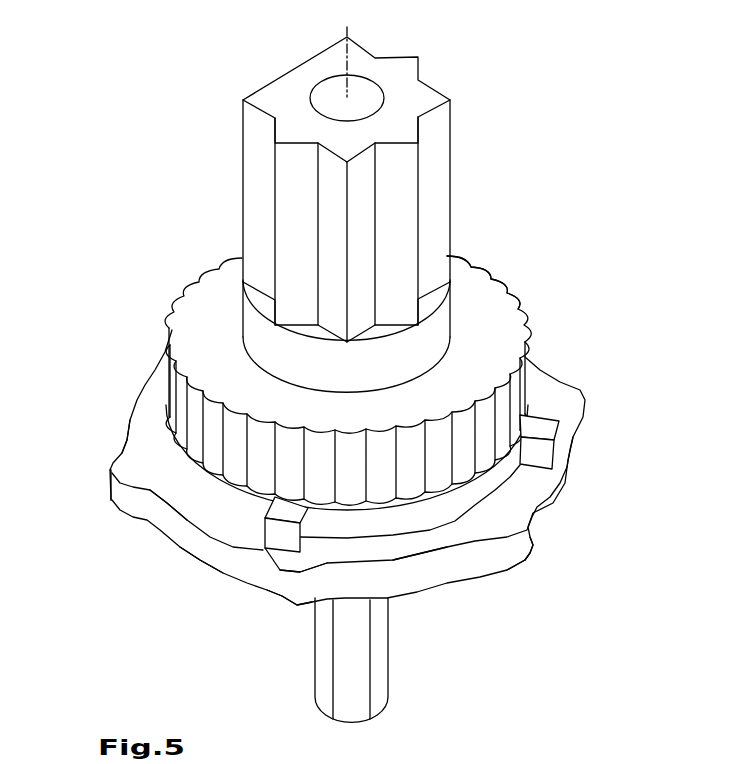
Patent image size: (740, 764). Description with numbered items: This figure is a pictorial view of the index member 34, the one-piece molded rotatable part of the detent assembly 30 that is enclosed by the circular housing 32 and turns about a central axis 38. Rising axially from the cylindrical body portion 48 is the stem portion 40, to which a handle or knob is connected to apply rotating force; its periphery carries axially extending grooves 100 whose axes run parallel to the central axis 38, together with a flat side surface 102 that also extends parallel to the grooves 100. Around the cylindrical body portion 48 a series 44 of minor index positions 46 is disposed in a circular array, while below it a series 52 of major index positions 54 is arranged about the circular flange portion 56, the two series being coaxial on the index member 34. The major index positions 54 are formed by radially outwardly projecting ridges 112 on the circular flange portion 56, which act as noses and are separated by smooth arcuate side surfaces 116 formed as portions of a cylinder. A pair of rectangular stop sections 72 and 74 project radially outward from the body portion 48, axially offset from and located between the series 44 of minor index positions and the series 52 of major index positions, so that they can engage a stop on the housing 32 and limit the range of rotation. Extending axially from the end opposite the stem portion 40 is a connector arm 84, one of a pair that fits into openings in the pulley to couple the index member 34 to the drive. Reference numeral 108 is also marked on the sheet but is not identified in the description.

The detent assembly 30 is at (614, 749).
The circular housing 32 is at (704, 752).
The index member 34 is at (528, 201).
The central axis 38 is at (358, 48).
The stem portion 40 is at (369, 173).
The series of minor index positions 44 is at (368, 375).
The minor index positions 46 is at (200, 412).
The cylindrical body portion 48 is at (519, 299).
The series of major index positions 52 is at (552, 507).
The major index positions 54 is at (114, 498).
The circular flange portion 56 is at (182, 560).
The rectangular stop section 72 is at (278, 540).
The rectangular stop section 74 is at (557, 447).
The connector arm 84 is at (350, 703).
The axially extending grooves 100 is at (266, 172).
The flat side surface 102 is at (288, 70).
The housing wall 108 is at (499, 756).
The ridges 112 is at (110, 486).
The arcuate side surfaces 116 is at (172, 532).